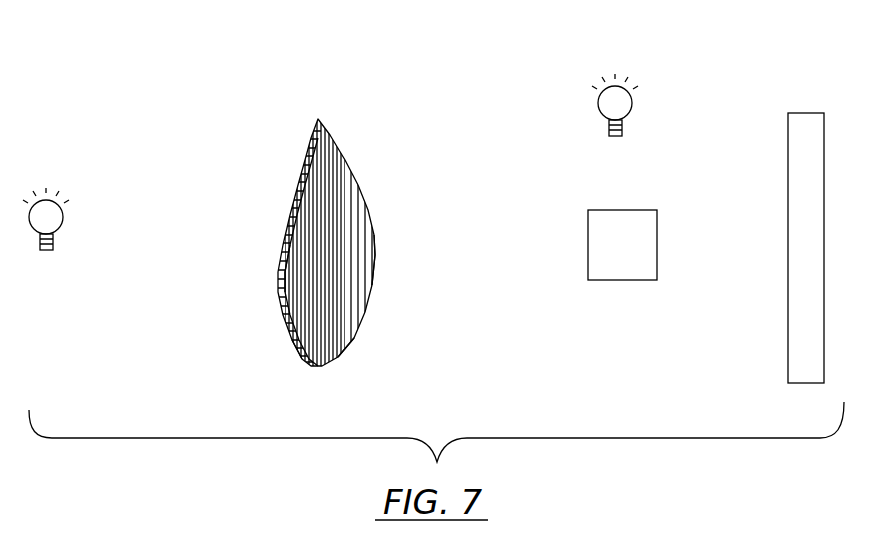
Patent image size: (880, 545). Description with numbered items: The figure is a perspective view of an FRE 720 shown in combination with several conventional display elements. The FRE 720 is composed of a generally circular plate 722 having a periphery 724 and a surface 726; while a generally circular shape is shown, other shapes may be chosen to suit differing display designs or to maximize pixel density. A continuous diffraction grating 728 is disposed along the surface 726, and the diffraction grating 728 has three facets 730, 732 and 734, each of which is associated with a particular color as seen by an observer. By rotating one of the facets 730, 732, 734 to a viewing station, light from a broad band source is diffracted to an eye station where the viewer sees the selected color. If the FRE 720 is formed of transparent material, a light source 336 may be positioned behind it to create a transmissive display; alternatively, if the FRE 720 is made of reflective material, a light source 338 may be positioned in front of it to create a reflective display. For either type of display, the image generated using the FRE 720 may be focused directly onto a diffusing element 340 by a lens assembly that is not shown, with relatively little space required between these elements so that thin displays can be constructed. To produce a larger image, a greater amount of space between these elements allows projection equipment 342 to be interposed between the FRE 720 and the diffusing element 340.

The FRE 720 is at (342, 208).
The plate 722 is at (284, 242).
The periphery 724 is at (303, 141).
The surface 726 is at (319, 119).
The diffraction grating 728 is at (359, 196).
The facet 730 is at (370, 262).
The facet 732 is at (343, 324).
The facet 734 is at (298, 347).
The light source 336 is at (45, 282).
The light source 338 is at (590, 76).
The diffusing element 340 is at (808, 113).
The projection equipment 342 is at (617, 280).